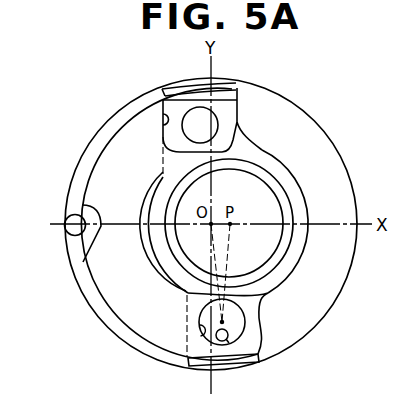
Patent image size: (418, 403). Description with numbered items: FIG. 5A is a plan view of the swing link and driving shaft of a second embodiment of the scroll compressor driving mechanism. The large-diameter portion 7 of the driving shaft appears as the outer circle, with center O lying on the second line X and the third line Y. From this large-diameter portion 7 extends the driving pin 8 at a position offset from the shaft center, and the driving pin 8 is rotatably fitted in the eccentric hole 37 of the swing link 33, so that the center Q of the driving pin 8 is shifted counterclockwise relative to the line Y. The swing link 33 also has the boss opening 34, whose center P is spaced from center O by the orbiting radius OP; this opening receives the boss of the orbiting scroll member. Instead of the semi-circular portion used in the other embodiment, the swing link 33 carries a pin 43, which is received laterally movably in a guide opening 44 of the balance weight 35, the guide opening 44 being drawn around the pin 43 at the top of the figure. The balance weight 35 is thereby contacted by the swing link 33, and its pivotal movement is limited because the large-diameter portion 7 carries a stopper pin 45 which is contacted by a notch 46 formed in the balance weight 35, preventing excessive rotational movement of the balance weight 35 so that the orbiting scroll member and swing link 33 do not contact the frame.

The large-diameter portion 7 is at (328, 290).
The driving pin 8 is at (240, 328).
The swing link 33 is at (265, 160).
The boss opening 34 is at (276, 192).
The balance weight 35 is at (103, 163).
The eccentric hole 37 is at (202, 335).
The pin 43 is at (197, 117).
The tab 44 is at (168, 119).
The stopper pin 45 is at (70, 230).
The notch 46 is at (83, 262).